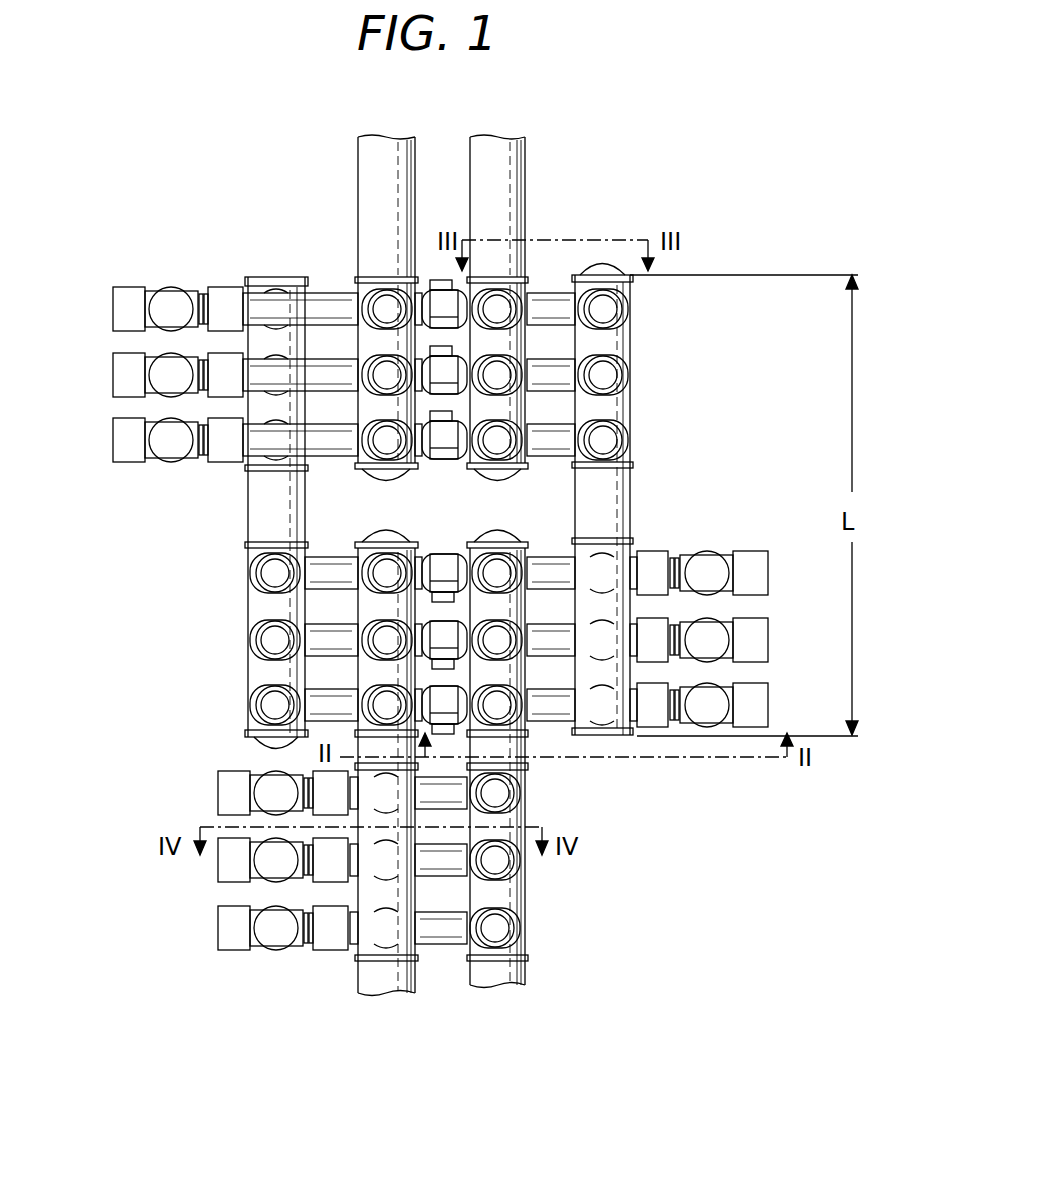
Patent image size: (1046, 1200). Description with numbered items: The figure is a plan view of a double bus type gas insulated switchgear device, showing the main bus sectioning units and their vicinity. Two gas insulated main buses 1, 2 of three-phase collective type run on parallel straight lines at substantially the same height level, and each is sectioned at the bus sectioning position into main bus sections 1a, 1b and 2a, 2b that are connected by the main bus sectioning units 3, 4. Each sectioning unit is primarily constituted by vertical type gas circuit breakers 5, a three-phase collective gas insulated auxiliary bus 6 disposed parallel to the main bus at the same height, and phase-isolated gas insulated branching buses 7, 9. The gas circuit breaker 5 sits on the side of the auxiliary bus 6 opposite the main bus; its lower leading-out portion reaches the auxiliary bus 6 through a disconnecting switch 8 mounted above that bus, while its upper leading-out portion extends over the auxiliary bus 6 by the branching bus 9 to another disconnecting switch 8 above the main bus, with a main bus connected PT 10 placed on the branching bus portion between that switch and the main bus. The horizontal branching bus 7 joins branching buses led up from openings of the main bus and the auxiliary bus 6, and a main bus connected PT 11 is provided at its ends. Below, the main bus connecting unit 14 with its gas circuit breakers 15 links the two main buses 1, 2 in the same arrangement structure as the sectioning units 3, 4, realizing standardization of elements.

The gas insulated main bus 1 is at (366, 157).
The gas insulated main bus section 1a is at (368, 196).
The gas insulated main bus section 1b is at (362, 975).
The gas insulated main bus 2 is at (515, 157).
The gas insulated main bus section 2a is at (512, 196).
The gas insulated main bus section 2b is at (518, 975).
The main bus sectioning unit 3 is at (66, 398).
The main bus sectioning unit 4 is at (820, 660).
The gas circuit breaker 5 is at (170, 445).
The gas insulated auxiliary bus 6 is at (617, 410).
The gas insulated branching bus 7 is at (557, 318).
The disconnecting switch 8 is at (385, 303).
The gas insulated branching bus 9 is at (300, 305).
The main bus connected PT 10 is at (443, 440).
The main bus connected PT 11 is at (495, 440).
The main bus connecting unit 14 is at (119, 929).
The gas circuit breaker 15 is at (280, 940).